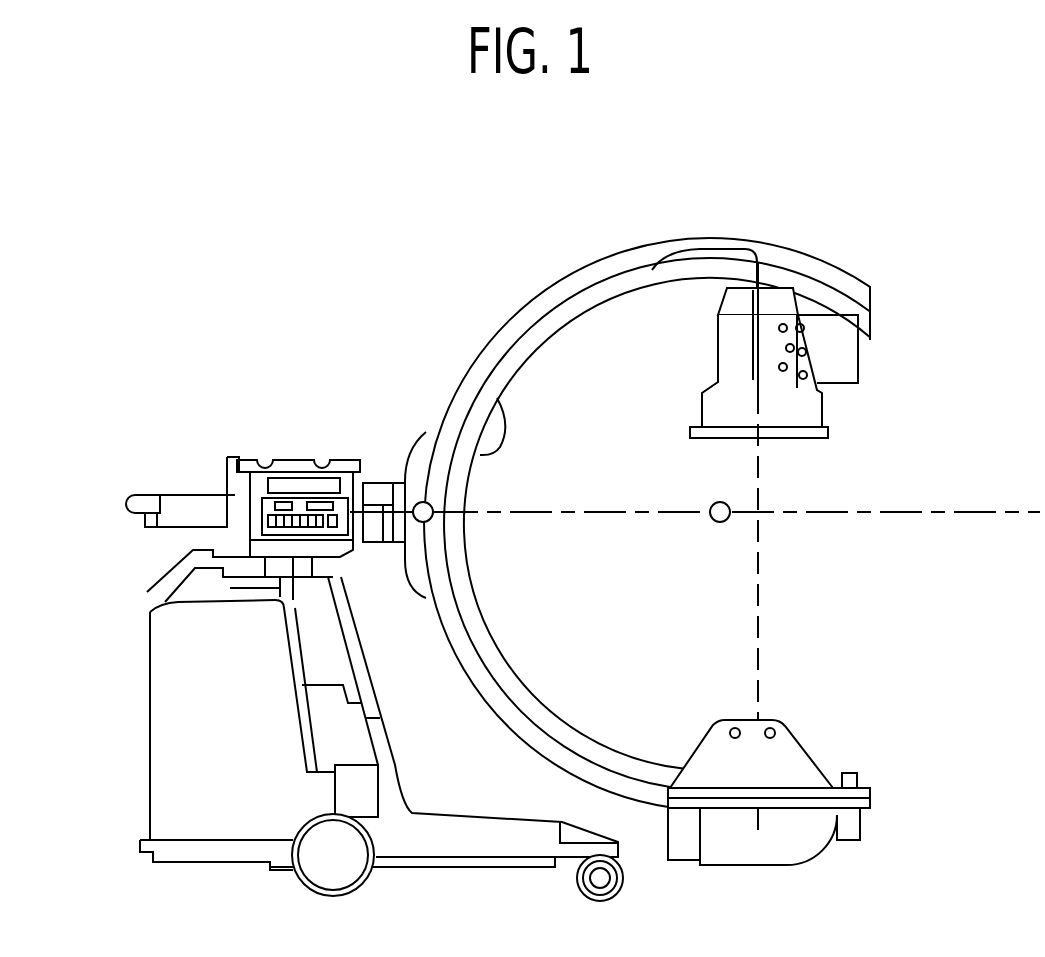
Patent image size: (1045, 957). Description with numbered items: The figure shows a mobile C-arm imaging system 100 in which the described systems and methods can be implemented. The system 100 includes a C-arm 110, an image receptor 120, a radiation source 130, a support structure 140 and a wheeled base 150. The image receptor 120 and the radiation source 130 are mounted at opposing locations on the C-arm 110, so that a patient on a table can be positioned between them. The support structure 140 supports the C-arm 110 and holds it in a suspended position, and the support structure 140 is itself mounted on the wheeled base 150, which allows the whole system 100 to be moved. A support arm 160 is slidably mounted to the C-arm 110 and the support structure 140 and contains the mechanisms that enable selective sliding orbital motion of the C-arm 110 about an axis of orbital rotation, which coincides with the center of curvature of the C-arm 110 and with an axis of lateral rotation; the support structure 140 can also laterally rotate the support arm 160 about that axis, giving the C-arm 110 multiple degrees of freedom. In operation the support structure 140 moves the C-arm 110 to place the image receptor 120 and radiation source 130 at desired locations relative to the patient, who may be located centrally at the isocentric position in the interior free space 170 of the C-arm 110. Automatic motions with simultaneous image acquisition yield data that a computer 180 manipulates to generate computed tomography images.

The mobile C-arm imaging system 100 is at (206, 305).
The C-arm 110 is at (655, 238).
The image receptor 120 is at (822, 407).
The radiation source 130 is at (803, 740).
The support structure 140 is at (100, 503).
The wheeled base 150 is at (140, 845).
The support arm 160 is at (425, 433).
The interior free space 170 is at (706, 561).
The computer 180 is at (337, 460).